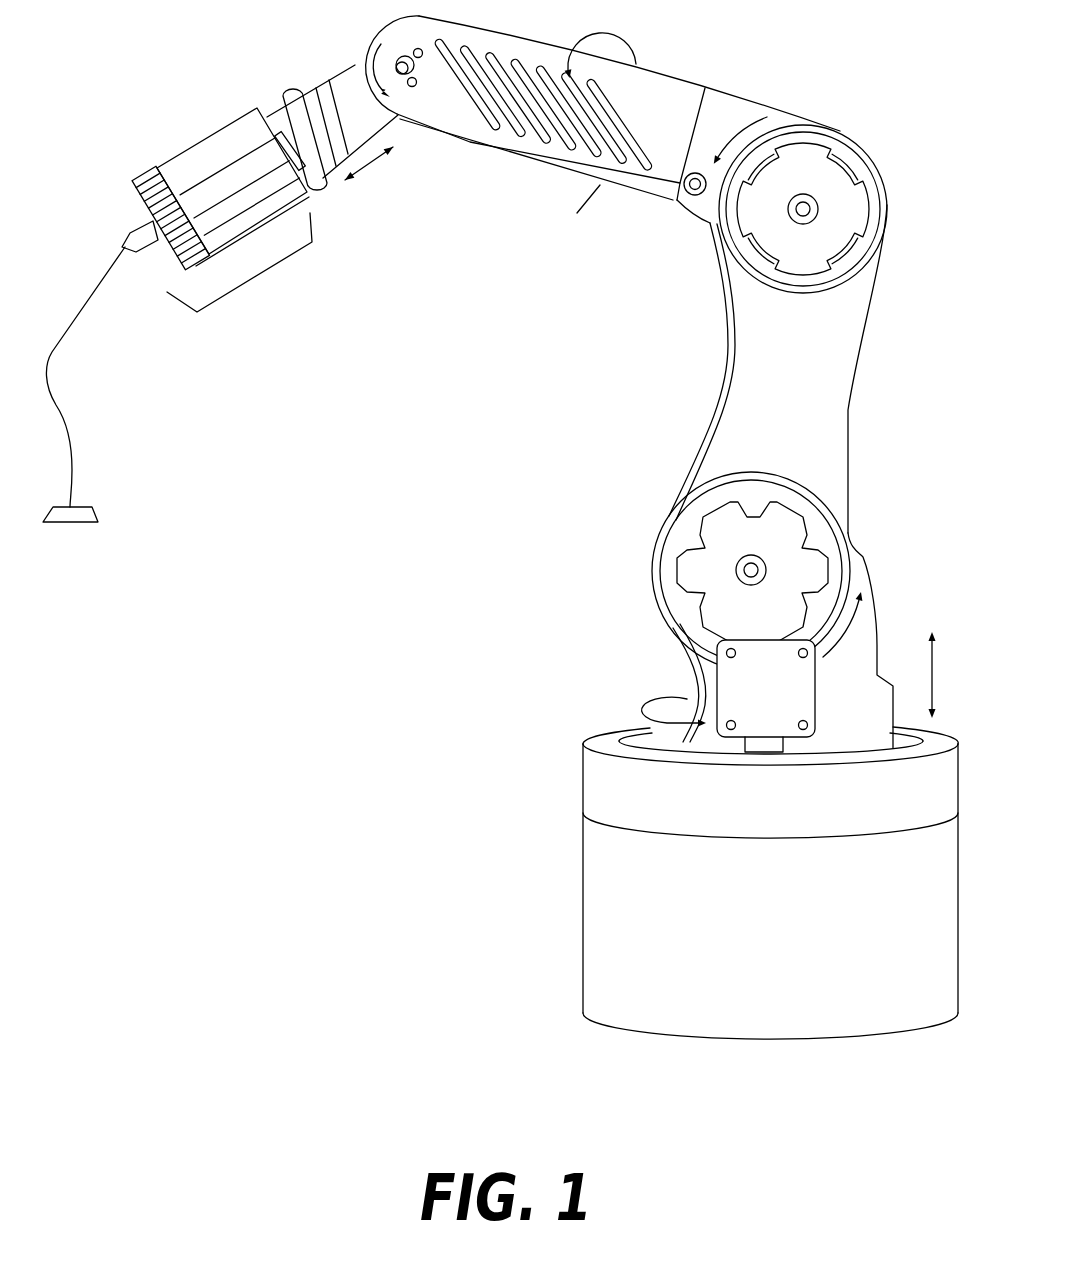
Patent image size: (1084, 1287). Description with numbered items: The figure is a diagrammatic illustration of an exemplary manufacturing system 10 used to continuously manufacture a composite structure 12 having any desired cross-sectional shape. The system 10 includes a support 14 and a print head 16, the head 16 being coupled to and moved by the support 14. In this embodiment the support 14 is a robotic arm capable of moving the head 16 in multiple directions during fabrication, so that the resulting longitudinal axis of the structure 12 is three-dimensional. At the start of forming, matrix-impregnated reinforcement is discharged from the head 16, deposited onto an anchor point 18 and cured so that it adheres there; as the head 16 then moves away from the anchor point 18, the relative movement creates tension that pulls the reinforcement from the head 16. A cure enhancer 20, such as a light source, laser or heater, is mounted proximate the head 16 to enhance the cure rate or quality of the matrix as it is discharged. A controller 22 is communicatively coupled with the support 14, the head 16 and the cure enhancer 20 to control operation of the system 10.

The system 10 is at (399, 768).
The composite structure 12 is at (77, 470).
The support 14 is at (797, 430).
The print head 16 is at (257, 279).
The anchor point 18 is at (65, 524).
The cure enhancer 20 is at (168, 258).
The controller 22 is at (780, 702).